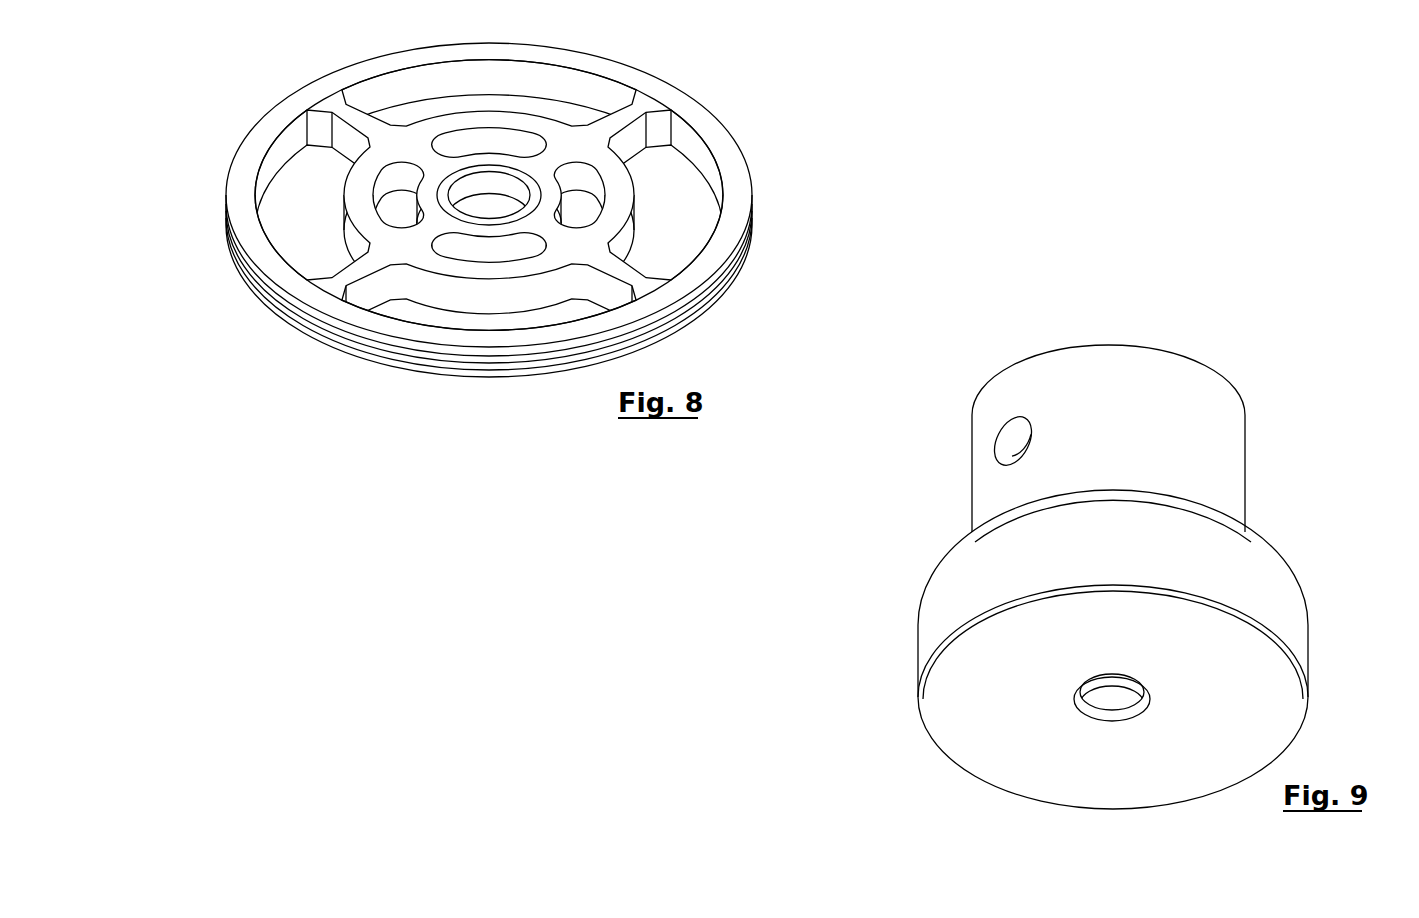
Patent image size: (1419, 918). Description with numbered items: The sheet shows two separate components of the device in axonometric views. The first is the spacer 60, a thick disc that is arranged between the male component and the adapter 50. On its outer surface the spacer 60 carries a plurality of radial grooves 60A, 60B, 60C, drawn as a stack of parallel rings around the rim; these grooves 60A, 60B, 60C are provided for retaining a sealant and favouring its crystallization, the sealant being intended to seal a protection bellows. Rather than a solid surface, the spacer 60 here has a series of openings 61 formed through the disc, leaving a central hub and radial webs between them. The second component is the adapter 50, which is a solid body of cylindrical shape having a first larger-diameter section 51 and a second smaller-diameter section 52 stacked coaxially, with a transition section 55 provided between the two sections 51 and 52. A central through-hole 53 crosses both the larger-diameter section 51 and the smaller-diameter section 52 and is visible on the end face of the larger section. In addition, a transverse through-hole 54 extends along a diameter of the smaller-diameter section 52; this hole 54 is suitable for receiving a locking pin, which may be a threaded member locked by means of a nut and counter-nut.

In FIG. 8, the spacer 60 is at (543, 224).
In FIG. 8, the radial groove 60A is at (752, 212).
In FIG. 8, the radial groove 60B is at (752, 222).
In FIG. 8, the radial groove 60C is at (752, 240).
In FIG. 8, the opening 61 is at (300, 223).
In FIG. 9, the adapter 50 is at (1089, 575).
In FIG. 9, the first larger-diameter section 51 is at (930, 627).
In FIG. 9, the second smaller-diameter section 52 is at (1160, 438).
In FIG. 9, the central through-hole 53 is at (1100, 703).
In FIG. 9, the transverse through-hole 54 is at (1010, 445).
In FIG. 9, the transition section 55 is at (1128, 493).